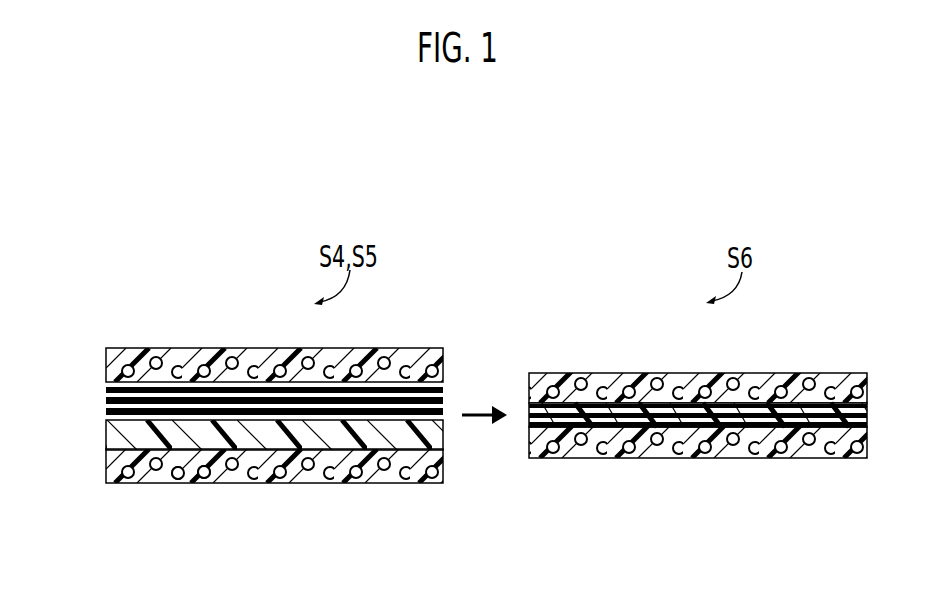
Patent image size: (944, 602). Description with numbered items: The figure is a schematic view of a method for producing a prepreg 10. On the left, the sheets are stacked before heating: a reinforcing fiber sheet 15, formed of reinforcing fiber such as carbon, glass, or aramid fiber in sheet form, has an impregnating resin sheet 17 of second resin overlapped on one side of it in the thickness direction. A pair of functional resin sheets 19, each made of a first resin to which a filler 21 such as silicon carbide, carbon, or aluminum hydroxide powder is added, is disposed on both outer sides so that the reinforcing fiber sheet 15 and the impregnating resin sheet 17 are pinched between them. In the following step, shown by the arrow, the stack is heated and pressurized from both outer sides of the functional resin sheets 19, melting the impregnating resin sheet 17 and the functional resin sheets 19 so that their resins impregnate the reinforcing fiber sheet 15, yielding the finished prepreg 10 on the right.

The prepreg 10 is at (768, 349).
The reinforcing fiber sheet 15 is at (107, 399).
The impregnating resin sheet 17 is at (107, 437).
The functional resin sheet 19 is at (107, 366).
The filler 21 is at (205, 466).